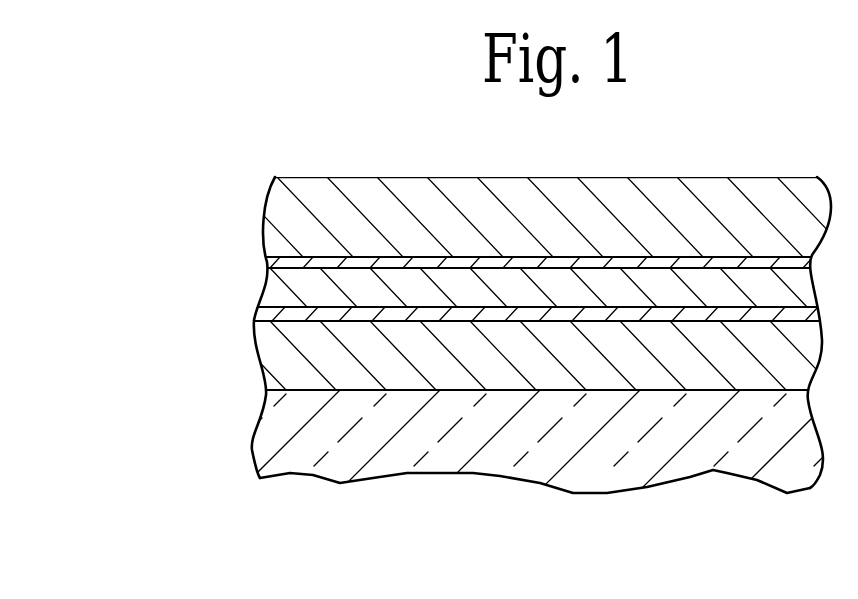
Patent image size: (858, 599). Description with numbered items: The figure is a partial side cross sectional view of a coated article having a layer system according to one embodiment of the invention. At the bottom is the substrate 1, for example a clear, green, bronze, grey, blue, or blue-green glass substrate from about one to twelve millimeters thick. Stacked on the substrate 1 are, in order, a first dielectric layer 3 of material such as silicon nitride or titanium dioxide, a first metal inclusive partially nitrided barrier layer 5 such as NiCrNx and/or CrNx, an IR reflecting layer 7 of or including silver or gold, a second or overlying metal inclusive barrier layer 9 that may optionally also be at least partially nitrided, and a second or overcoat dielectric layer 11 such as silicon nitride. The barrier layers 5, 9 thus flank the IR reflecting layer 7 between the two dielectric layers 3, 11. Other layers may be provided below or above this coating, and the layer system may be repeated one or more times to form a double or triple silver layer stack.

The substrate 1 is at (253, 448).
The first dielectric layer 3 is at (268, 343).
The first metal inclusive partially nitrided barrier layer 5 is at (268, 313).
The IR reflecting layer 7 is at (270, 292).
The second or overlying metal inclusive barrier layer 9 is at (270, 258).
The second or overcoat dielectric layer 11 is at (272, 200).